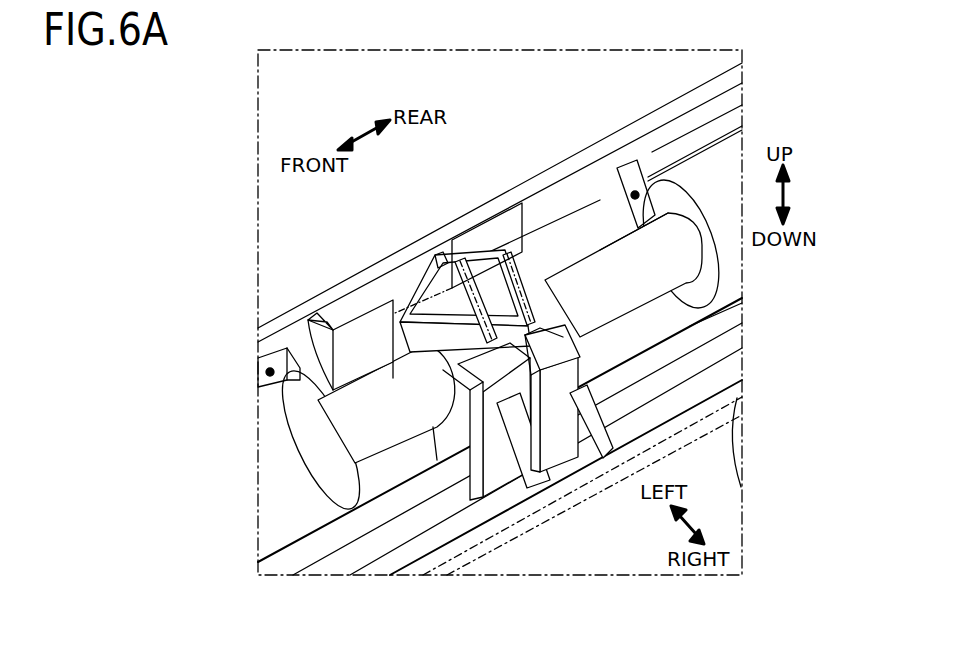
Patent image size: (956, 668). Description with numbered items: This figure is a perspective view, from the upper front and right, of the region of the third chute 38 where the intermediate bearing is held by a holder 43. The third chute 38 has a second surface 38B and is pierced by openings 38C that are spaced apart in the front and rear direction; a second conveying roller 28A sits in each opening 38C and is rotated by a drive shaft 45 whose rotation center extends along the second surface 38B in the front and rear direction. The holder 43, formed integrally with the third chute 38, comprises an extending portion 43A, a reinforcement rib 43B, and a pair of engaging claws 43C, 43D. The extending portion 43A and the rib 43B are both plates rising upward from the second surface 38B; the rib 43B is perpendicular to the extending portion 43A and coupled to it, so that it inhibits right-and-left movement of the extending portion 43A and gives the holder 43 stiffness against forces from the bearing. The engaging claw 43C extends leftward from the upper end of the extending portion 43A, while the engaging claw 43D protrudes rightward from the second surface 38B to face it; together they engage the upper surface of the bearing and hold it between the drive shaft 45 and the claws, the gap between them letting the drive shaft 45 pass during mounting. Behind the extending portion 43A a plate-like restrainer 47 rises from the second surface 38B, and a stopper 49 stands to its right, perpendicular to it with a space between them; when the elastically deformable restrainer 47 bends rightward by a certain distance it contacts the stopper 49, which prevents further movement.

The second conveying roller 28A is at (723, 180).
The third chute 38 is at (500, 200).
The second surface 38B is at (370, 552).
The opening 38C is at (270, 372).
The holder 43 is at (520, 493).
The extending portion 43A is at (473, 437).
The reinforcement rib 43B is at (510, 462).
The engaging claw 43C is at (425, 297).
The engaging claw 43D is at (423, 296).
The drive shaft 45 is at (593, 280).
The restrainer 47 is at (567, 372).
The stopper 49 is at (585, 445).